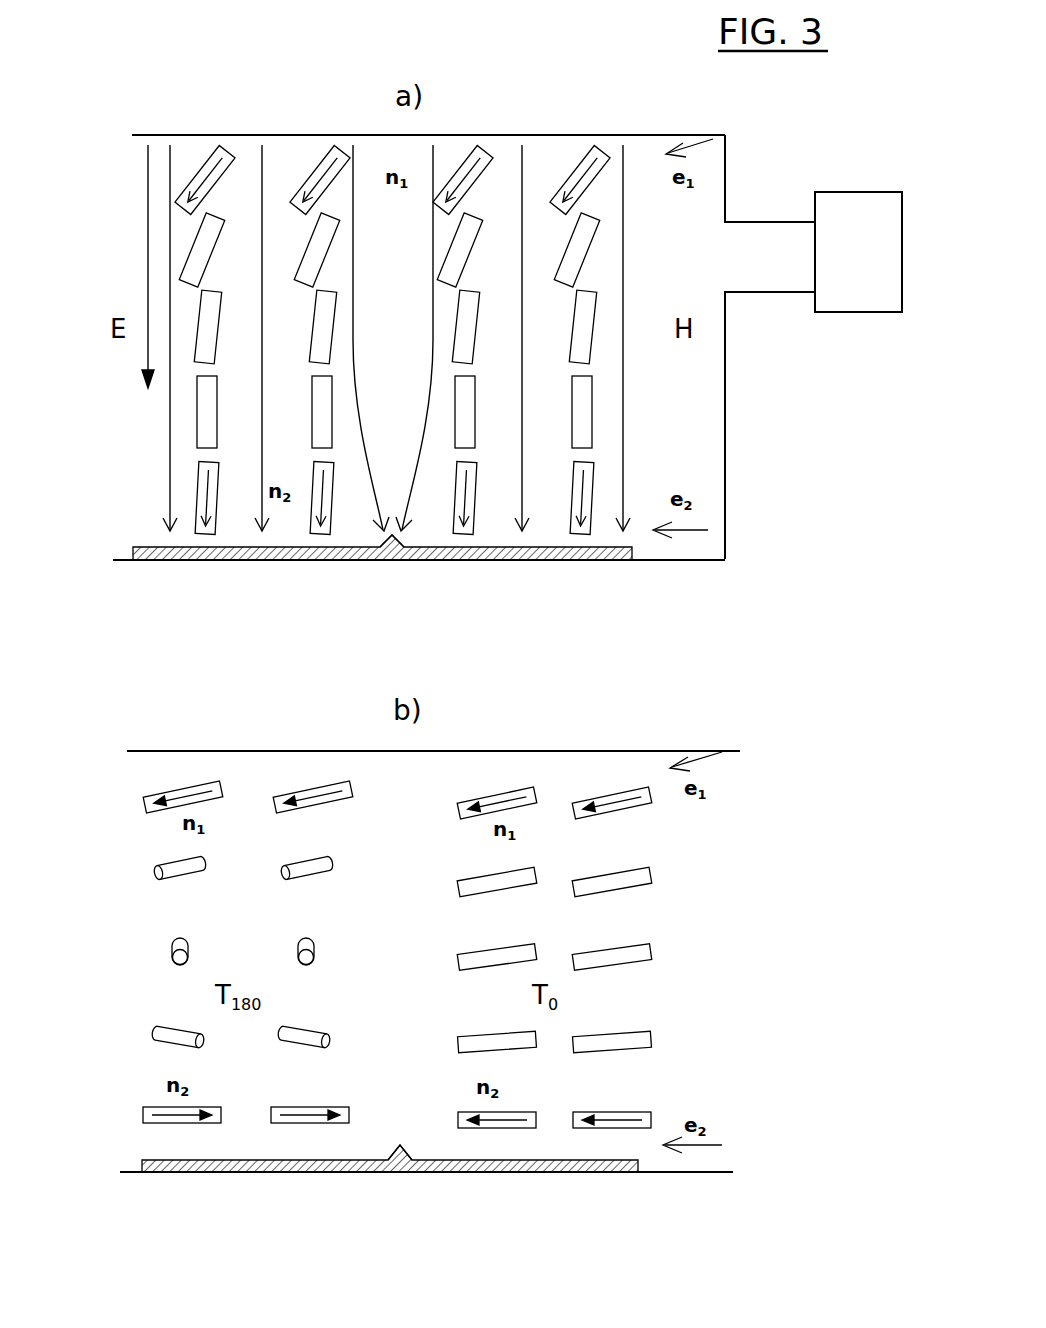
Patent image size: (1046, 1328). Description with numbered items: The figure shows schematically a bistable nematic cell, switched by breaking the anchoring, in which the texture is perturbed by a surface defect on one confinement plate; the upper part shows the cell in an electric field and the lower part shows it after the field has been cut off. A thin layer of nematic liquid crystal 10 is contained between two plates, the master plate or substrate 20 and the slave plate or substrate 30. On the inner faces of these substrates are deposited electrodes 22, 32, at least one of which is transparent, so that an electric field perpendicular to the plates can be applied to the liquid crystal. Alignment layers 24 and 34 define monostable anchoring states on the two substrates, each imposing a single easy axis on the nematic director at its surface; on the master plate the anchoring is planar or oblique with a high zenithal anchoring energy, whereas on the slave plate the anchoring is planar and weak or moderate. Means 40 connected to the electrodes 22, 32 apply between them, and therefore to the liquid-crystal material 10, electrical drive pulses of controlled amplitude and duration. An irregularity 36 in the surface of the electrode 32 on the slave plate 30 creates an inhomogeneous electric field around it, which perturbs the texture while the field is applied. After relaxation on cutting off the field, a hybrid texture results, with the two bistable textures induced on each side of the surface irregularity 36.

The nematic liquid crystal 10 is at (148, 441).
The substrate 20 is at (262, 135).
The electrode 22 is at (150, 146).
The alignment layer 24 is at (556, 142).
The substrate 30 is at (205, 560).
The electrode 32 is at (125, 559).
The alignment layer 34 is at (600, 560).
The irregularity 36 is at (398, 560).
The means for applying electrical drive pulses 40 is at (860, 192).